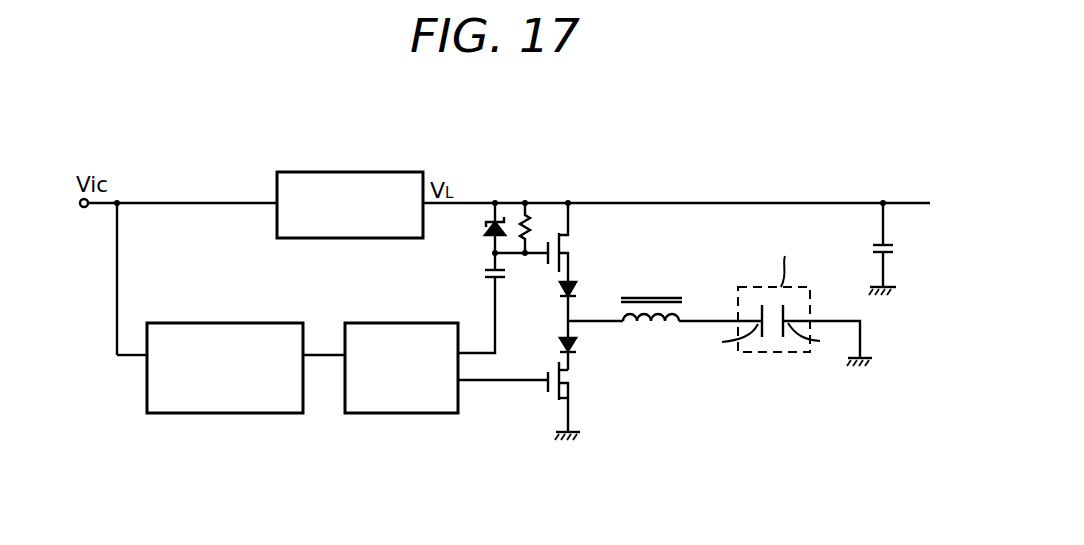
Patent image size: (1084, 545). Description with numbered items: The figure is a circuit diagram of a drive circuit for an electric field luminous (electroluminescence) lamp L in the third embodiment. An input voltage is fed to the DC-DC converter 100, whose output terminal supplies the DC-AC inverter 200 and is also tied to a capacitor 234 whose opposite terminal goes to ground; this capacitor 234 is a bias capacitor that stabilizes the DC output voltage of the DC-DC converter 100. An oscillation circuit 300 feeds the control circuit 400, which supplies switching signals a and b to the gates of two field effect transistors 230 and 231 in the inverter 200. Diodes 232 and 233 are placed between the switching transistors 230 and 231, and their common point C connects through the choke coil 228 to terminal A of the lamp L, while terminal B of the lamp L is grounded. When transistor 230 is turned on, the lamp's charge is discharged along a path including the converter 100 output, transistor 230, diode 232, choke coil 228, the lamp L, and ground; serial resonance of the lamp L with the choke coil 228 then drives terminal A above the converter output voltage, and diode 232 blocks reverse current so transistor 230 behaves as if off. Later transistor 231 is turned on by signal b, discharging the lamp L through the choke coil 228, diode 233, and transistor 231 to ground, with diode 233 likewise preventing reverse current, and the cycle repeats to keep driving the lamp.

The DC-DC converter 100 is at (350, 171).
The DC-AC inverter 200 is at (699, 324).
The choke coil 228 is at (660, 322).
The field effect transistor 230 is at (584, 242).
The field effect transistor 231 is at (580, 401).
The diode 232 is at (590, 310).
The diode 233 is at (590, 352).
The capacitor 234 is at (904, 249).
The oscillation circuit 300 is at (225, 413).
The control circuit 400 is at (415, 413).